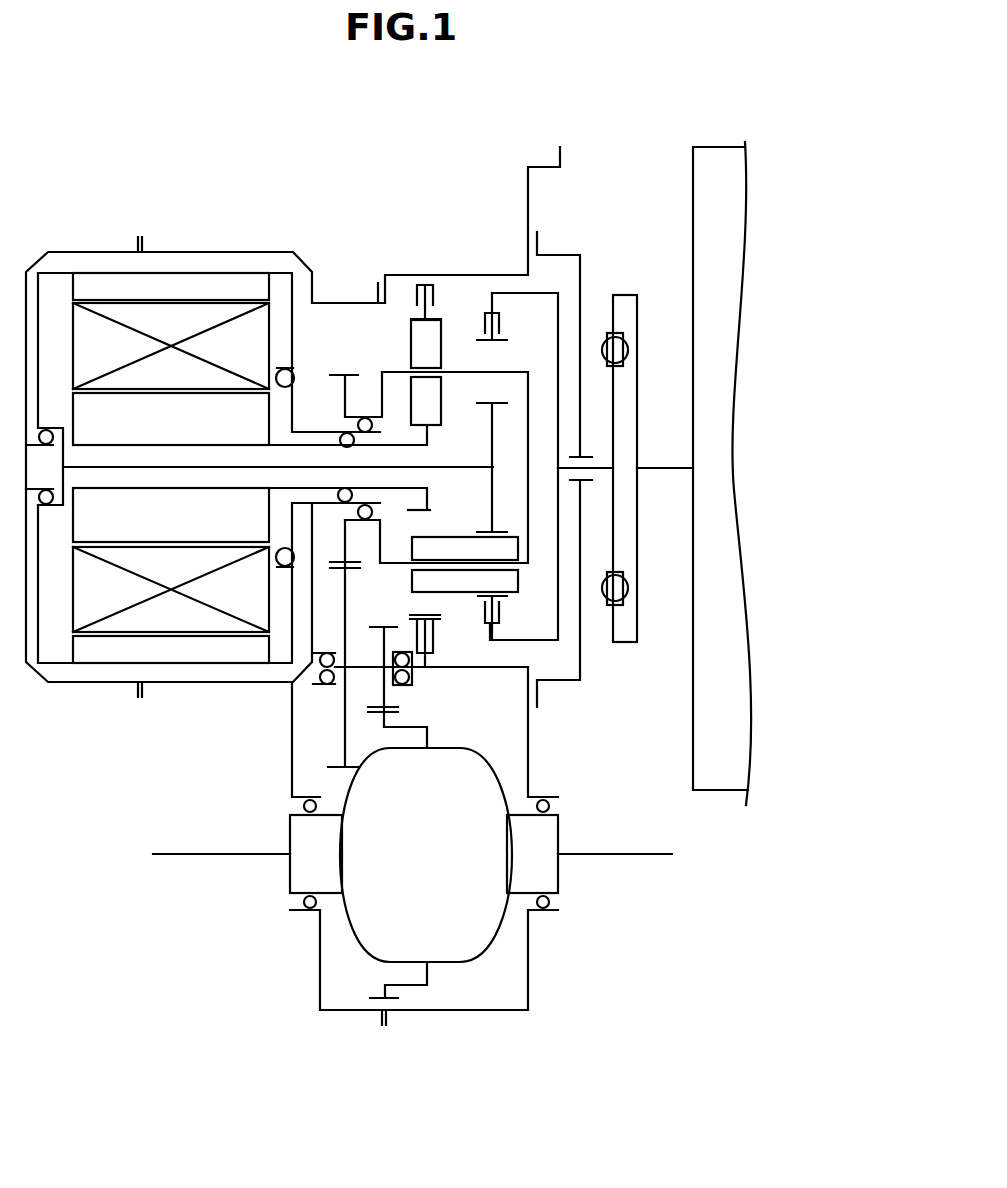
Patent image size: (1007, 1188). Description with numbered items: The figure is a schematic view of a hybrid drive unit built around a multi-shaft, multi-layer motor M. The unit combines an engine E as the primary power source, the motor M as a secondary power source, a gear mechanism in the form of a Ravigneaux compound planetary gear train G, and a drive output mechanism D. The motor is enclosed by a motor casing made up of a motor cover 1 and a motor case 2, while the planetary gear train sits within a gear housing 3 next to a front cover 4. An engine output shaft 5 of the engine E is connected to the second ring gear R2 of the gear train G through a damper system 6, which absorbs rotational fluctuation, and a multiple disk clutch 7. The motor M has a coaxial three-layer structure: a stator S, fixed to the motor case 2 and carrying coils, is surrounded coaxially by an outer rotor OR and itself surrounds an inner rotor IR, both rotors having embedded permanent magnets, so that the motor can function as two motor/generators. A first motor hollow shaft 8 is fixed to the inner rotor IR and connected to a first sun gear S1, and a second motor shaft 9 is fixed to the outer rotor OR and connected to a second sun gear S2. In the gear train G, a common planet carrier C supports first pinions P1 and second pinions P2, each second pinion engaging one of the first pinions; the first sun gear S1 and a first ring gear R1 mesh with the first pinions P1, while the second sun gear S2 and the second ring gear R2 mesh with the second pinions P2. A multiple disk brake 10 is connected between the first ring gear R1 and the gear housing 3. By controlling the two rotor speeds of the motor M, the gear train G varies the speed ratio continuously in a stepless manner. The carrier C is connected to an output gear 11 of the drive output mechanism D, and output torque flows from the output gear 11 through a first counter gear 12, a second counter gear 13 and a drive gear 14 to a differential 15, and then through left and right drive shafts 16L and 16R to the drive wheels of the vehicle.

The motor cover 1 is at (104, 252).
The motor case 2 is at (283, 252).
The gear housing 3 is at (500, 275).
The front cover 4 is at (580, 268).
The engine output shaft 5 is at (665, 471).
The damper system 6 is at (612, 335).
The multiple disk clutch 7 is at (502, 321).
The first motor hollow shaft 8 is at (410, 447).
The second motor shaft 9 is at (477, 467).
The multiple disk brake 10 is at (417, 296).
The output gear 11 is at (338, 372).
The first counter gear 12 is at (343, 590).
The second counter gear 13 is at (378, 627).
The drive gear 14 is at (396, 713).
The differential 15 is at (426, 855).
The left drive shaft 16L is at (217, 853).
The right drive shaft 16R is at (628, 853).
The multi-shaft, multi-layer motor M is at (171, 428).
The Ravigneaux compound planetary gear train G is at (435, 486).
The engine E is at (710, 144).
The drive output mechanism D is at (412, 846).
The common planet carrier C is at (528, 556).
The outer rotor OR is at (171, 468).
The stator S is at (171, 467).
The inner rotor IR is at (171, 467).
The first ring gear R1 is at (413, 321).
The second ring gear R2 is at (503, 341).
The first pinions P1 is at (441, 345).
The second pinions P2 is at (457, 594).
The first sun gear S1 is at (432, 511).
The second sun gear S2 is at (503, 398).